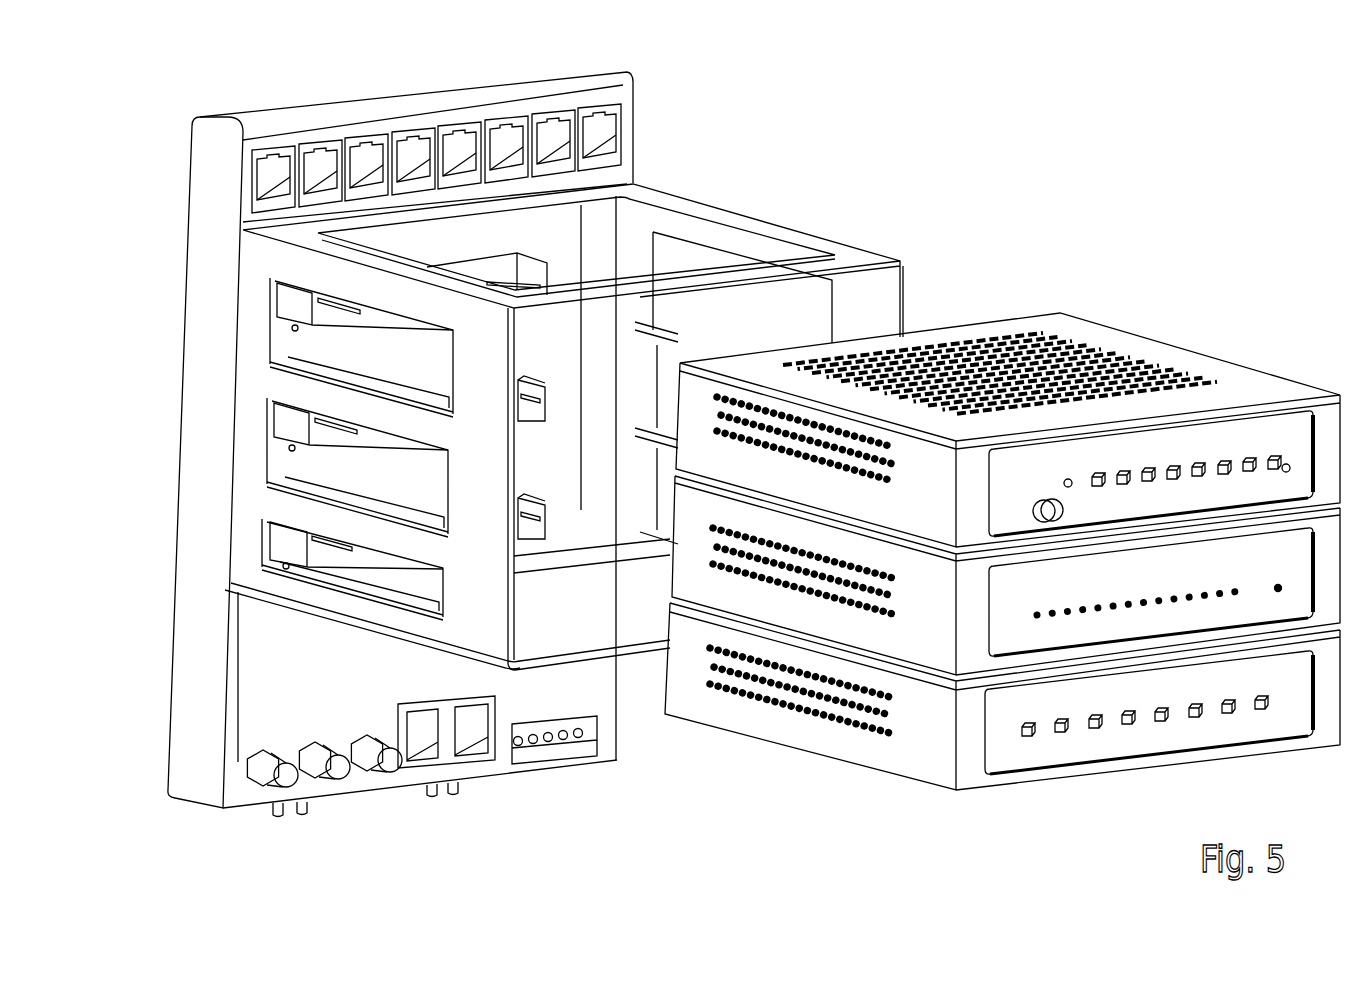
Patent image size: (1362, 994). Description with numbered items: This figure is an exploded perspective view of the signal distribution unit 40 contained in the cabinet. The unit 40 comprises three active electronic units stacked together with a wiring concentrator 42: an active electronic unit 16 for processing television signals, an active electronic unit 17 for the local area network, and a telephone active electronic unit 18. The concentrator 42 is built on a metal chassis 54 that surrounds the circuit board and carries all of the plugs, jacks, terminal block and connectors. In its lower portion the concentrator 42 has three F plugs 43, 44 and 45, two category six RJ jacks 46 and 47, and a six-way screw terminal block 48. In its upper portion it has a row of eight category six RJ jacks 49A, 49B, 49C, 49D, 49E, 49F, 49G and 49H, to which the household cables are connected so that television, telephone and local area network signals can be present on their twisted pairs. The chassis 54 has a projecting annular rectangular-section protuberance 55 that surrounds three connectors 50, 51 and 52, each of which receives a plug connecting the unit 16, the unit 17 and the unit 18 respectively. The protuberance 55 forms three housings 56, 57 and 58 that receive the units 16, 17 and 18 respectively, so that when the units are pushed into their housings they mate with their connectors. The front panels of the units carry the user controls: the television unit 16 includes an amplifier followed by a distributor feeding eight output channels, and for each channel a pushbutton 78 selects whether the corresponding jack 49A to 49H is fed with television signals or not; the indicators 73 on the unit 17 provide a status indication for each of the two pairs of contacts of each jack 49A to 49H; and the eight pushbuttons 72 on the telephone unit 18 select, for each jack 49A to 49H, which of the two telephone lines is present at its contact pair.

The active electronic unit for processing television signals 16 is at (1008, 430).
The active electronic unit for the local area network 17 is at (1006, 575).
The telephone active electronic unit 18 is at (1002, 720).
The unit 40 is at (1002, 471).
The wiring concentrator 42 is at (526, 117).
The F plug 43 is at (285, 786).
The F plug 44 is at (342, 780).
The F plug 45 is at (393, 775).
The RJ 45 category 6 jack 46 is at (433, 743).
The RJ 45 category 6 jack 47 is at (477, 737).
The six-way screw terminal block 48 is at (557, 757).
The RJ 45 category 6 jack 49A is at (272, 160).
The RJ 45 category 6 jack 49B is at (317, 150).
The RJ 45 category 6 jack 49C is at (367, 140).
The RJ 45 category 6 jack 49D is at (417, 134).
The RJ 45 category 6 jack 49E is at (467, 128).
The RJ 45 category 6 jack 49F is at (513, 123).
The RJ 45 category 6 jack 49G is at (563, 118).
The RJ 45 category 6 jack 49H is at (610, 110).
The connector 50 is at (497, 262).
The connector 51 is at (528, 383).
The connector 52 is at (522, 497).
The metal chassis 54 is at (190, 537).
The projecting annular rectangular-section protuberance 55 is at (493, 538).
The housing 56 is at (407, 343).
The housing 57 is at (400, 470).
The housing 58 is at (410, 577).
The pushbuttons 72 is at (1267, 715).
The indicators 73 is at (1250, 586).
The pushbutton 78 is at (1271, 462).